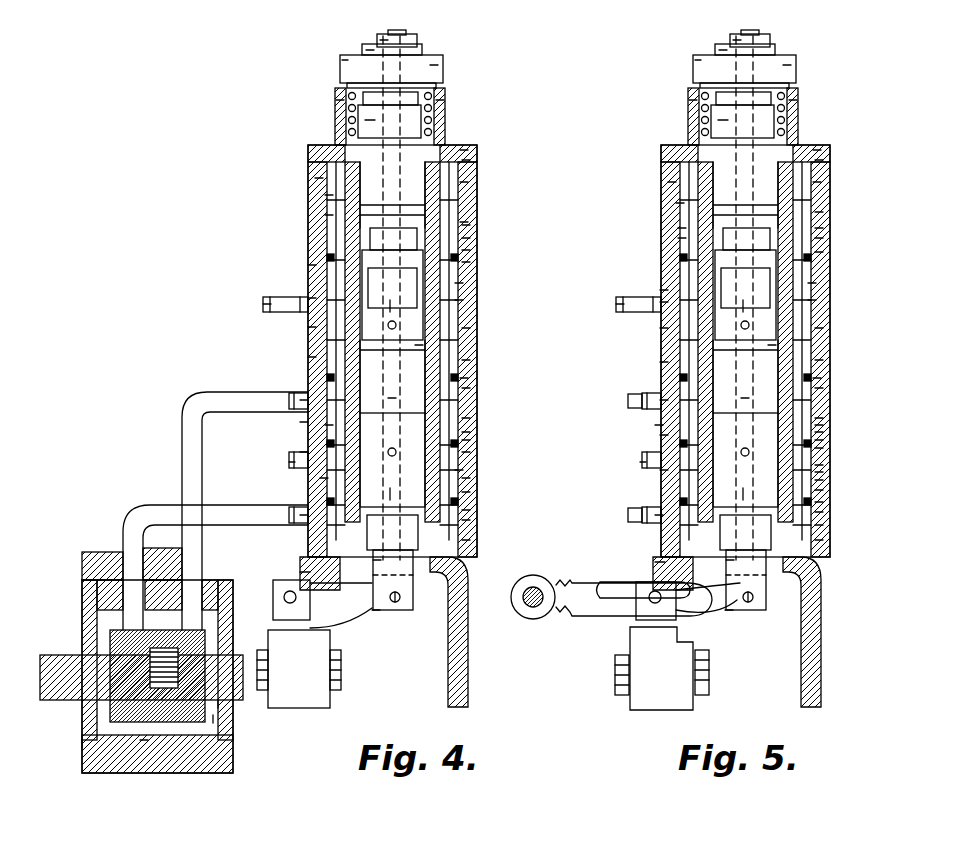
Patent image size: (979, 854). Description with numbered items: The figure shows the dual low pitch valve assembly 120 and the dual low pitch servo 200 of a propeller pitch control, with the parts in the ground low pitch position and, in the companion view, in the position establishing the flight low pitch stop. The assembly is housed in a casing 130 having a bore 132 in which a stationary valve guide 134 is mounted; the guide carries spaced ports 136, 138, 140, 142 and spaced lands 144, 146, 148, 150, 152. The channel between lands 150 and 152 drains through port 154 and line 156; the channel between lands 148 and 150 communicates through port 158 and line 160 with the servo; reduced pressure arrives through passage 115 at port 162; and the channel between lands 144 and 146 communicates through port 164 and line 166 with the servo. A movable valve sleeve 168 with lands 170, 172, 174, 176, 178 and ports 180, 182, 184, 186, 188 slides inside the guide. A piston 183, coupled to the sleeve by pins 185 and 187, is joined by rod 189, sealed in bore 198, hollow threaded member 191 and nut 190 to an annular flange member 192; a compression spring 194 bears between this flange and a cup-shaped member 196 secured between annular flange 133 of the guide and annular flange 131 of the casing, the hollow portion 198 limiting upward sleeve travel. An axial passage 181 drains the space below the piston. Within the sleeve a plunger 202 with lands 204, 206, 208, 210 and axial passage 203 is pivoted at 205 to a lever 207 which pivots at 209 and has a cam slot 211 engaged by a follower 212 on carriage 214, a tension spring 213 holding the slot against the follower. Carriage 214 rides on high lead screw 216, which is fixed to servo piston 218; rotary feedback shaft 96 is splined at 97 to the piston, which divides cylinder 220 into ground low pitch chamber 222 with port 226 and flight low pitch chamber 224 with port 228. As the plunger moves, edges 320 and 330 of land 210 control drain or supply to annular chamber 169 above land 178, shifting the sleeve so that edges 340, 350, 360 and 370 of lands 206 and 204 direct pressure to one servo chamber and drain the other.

In FIG. 4, the rotary feedback shaft 96 is at (70, 701).
In FIG. 4, the straight splines 97 is at (100, 662).
In FIG. 4, the passage 115 is at (289, 462).
In FIG. 5, the passage 115 is at (642, 463).
In FIG. 4, the dual low pitch valve assembly 120 is at (312, 62).
In FIG. 5, the dual low pitch valve assembly 120 is at (668, 62).
In FIG. 4, the casing 130 is at (477, 170).
In FIG. 5, the casing 130 is at (832, 172).
In FIG. 4, the annular flange 131 is at (465, 146).
In FIG. 5, the annular flange 131 is at (816, 147).
In FIG. 4, the bore 132 is at (467, 222).
In FIG. 5, the bore 132 is at (682, 228).
In FIG. 4, the annular flange 133 is at (468, 165).
In FIG. 5, the annular flange 133 is at (822, 165).
In FIG. 4, the stationary valve guide 134 is at (470, 262).
In FIG. 5, the stationary valve guide 134 is at (820, 212).
In FIG. 4, the ports 136 is at (470, 510).
In FIG. 5, the ports 136 is at (822, 512).
In FIG. 4, the ports 138 is at (462, 470).
In FIG. 5, the ports 138 is at (822, 465).
In FIG. 4, the ports 140 is at (475, 418).
In FIG. 5, the ports 140 is at (823, 432).
In FIG. 4, the ports 142 is at (470, 360).
In FIG. 5, the ports 142 is at (822, 360).
In FIG. 4, the land 144 is at (470, 540).
In FIG. 5, the land 144 is at (822, 540).
In FIG. 4, the land 146 is at (470, 492).
In FIG. 5, the land 146 is at (822, 480).
In FIG. 4, the land 148 is at (470, 432).
In FIG. 5, the land 148 is at (822, 448).
In FIG. 4, the land 150 is at (465, 378).
In FIG. 5, the land 150 is at (820, 378).
In FIG. 4, the land 152 is at (310, 265).
In FIG. 5, the land 152 is at (662, 290).
In FIG. 4, the port 154 is at (310, 298).
In FIG. 5, the port 154 is at (662, 302).
In FIG. 4, the line 156 is at (263, 308).
In FIG. 5, the line 156 is at (630, 303).
In FIG. 4, the port 158 is at (308, 400).
In FIG. 5, the port 158 is at (665, 400).
In FIG. 4, the line 160 is at (200, 410).
In FIG. 5, the line 160 is at (628, 522).
In FIG. 4, the port 162 is at (300, 452).
In FIG. 5, the port 162 is at (663, 470).
In FIG. 4, the port 164 is at (300, 515).
In FIG. 5, the port 164 is at (660, 515).
In FIG. 4, the line 166 is at (152, 510).
In FIG. 4, the movable valve sleeve 168 is at (470, 250).
In FIG. 5, the movable valve sleeve 168 is at (822, 252).
In FIG. 4, the annular chamber 169 is at (465, 182).
In FIG. 5, the annular chamber 169 is at (818, 183).
In FIG. 4, the land 170 is at (470, 520).
In FIG. 5, the land 170 is at (822, 525).
In FIG. 4, the land 172 is at (470, 478).
In FIG. 5, the land 172 is at (820, 490).
In FIG. 4, the land 174 is at (470, 452).
In FIG. 4, the land 176 is at (470, 388).
In FIG. 5, the land 176 is at (822, 388).
In FIG. 4, the land 178 is at (462, 300).
In FIG. 5, the land 178 is at (815, 300).
In FIG. 4, the ports 180 is at (325, 478).
In FIG. 4, the axial passage 181 is at (358, 120).
In FIG. 5, the axial passage 181 is at (711, 120).
In FIG. 4, the ports 182 is at (330, 425).
In FIG. 5, the ports 182 is at (662, 435).
In FIG. 4, the piston 183 is at (470, 238).
In FIG. 5, the piston 183 is at (822, 238).
In FIG. 4, the ports 184 is at (308, 422).
In FIG. 5, the ports 184 is at (660, 425).
In FIG. 4, the pin 185 is at (470, 226).
In FIG. 5, the pin 185 is at (822, 228).
In FIG. 4, the ports 186 is at (312, 358).
In FIG. 5, the ports 186 is at (663, 362).
In FIG. 4, the pin 187 is at (330, 215).
In FIG. 5, the pin 187 is at (682, 238).
In FIG. 4, the ports 188 is at (312, 327).
In FIG. 5, the ports 188 is at (662, 328).
In FIG. 4, the rod 189 is at (320, 178).
In FIG. 5, the rod 189 is at (672, 182).
In FIG. 4, the nut 190 is at (418, 42).
In FIG. 5, the nut 190 is at (771, 44).
In FIG. 4, the hollow threaded member 191 is at (378, 40).
In FIG. 5, the hollow threaded member 191 is at (731, 40).
In FIG. 4, the annular flange member 192 is at (437, 65).
In FIG. 5, the annular flange member 192 is at (790, 65).
In FIG. 4, the compression spring 194 is at (340, 102).
In FIG. 5, the compression spring 194 is at (693, 102).
In FIG. 4, the cup-shaped member 196 is at (445, 103).
In FIG. 5, the cup-shaped member 196 is at (798, 103).
In FIG. 4, the hollow portion 198 is at (330, 195).
In FIG. 5, the hollow portion 198 is at (680, 203).
In FIG. 4, the dual low pitch servo 200 is at (205, 802).
In FIG. 4, the plunger 202 is at (422, 562).
In FIG. 5, the plunger 202 is at (775, 565).
In FIG. 4, the axial passage 203 is at (390, 398).
In FIG. 5, the axial passage 203 is at (745, 398).
In FIG. 4, the land 204 is at (390, 500).
In FIG. 5, the land 204 is at (743, 500).
In FIG. 4, the pivotal connection 205 is at (396, 602).
In FIG. 5, the pivotal connection 205 is at (749, 604).
In FIG. 4, the land 206 is at (470, 440).
In FIG. 5, the land 206 is at (822, 425).
In FIG. 4, the lever 207 is at (374, 614).
In FIG. 5, the lever 207 is at (727, 614).
In FIG. 4, the land 208 is at (418, 345).
In FIG. 5, the land 208 is at (775, 345).
In FIG. 5, the pivot 209 is at (533, 608).
In FIG. 4, the land 210 is at (390, 312).
In FIG. 5, the land 210 is at (743, 312).
In FIG. 4, the cam slot 211 is at (345, 612).
In FIG. 5, the cam slot 211 is at (700, 602).
In FIG. 4, the follower 212 is at (290, 604).
In FIG. 5, the follower 212 is at (655, 602).
In FIG. 4, the tension spring 213 is at (310, 572).
In FIG. 5, the tension spring 213 is at (657, 563).
In FIG. 4, the carriage 214 is at (318, 700).
In FIG. 5, the carriage 214 is at (643, 698).
In FIG. 4, the high lead screw 216 is at (340, 685).
In FIG. 5, the high lead screw 216 is at (615, 668).
In FIG. 4, the piston 218 is at (143, 735).
In FIG. 4, the cylinder 220 is at (220, 722).
In FIG. 4, the ground low pitch chamber 222 is at (82, 752).
In FIG. 4, the flight low pitch chamber 224 is at (215, 720).
In FIG. 4, the port 226 is at (125, 605).
In FIG. 4, the port 228 is at (185, 606).
In FIG. 4, the upper edge 320 is at (462, 283).
In FIG. 5, the upper edge 320 is at (815, 283).
In FIG. 4, the edge 330 is at (470, 328).
In FIG. 5, the edge 330 is at (822, 328).
In FIG. 5, the edge 340 is at (820, 418).
In FIG. 5, the edge 350 is at (820, 440).
In FIG. 5, the edge 360 is at (822, 472).
In FIG. 5, the edge 370 is at (822, 502).